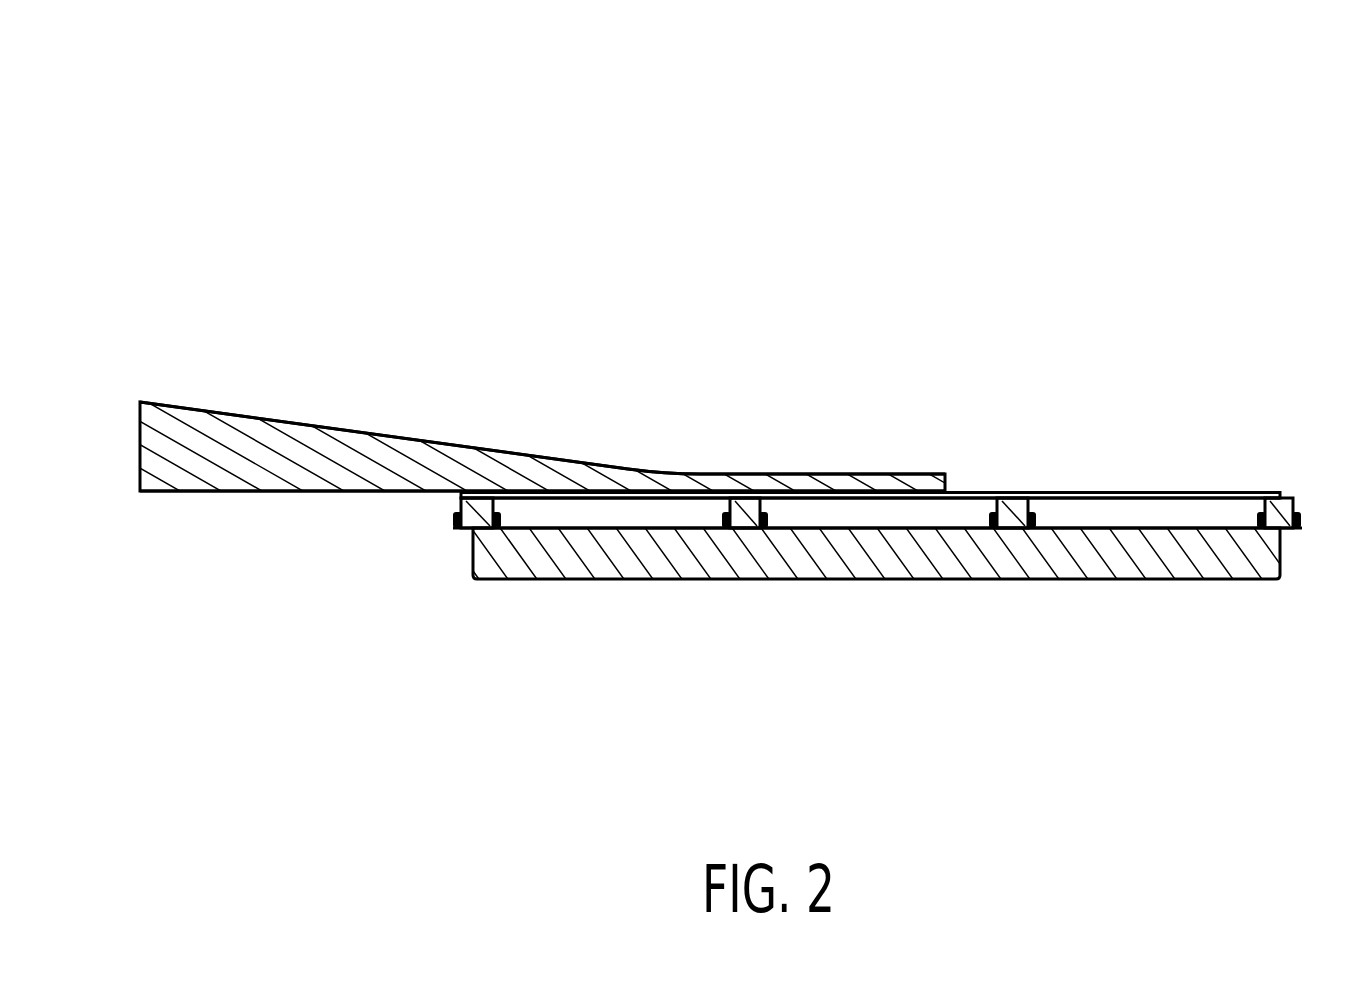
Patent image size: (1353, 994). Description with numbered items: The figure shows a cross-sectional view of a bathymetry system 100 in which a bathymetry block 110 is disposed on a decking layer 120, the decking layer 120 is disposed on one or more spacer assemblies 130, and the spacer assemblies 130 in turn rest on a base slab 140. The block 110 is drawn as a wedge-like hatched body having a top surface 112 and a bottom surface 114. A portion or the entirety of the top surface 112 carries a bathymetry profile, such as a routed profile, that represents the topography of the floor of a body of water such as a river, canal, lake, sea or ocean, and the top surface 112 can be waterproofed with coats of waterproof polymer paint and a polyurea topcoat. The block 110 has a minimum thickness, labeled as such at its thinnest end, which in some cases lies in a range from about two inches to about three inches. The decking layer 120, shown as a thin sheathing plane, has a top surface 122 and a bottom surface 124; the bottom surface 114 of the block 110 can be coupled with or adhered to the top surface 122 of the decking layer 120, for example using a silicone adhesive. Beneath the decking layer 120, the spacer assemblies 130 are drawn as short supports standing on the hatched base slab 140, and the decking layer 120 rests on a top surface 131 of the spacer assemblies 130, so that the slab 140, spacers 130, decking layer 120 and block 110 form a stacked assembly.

The bathymetry system 100 is at (618, 173).
The bathymetry block 110 is at (273, 547).
The top surface of block 112 is at (255, 415).
The bottom surface of block 114 is at (190, 495).
The decking layer 120 is at (1195, 468).
The top surface of decking layer 122 is at (1147, 488).
The bottom surface of decking layer 124 is at (1100, 500).
The spacer assembly 130 is at (448, 540).
The top surface of spacer assembly 131 is at (1288, 500).
The base slab 140 is at (1148, 613).